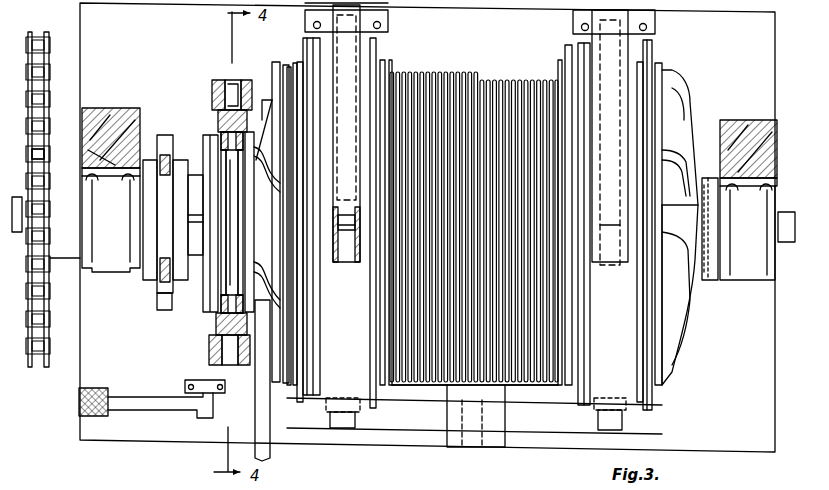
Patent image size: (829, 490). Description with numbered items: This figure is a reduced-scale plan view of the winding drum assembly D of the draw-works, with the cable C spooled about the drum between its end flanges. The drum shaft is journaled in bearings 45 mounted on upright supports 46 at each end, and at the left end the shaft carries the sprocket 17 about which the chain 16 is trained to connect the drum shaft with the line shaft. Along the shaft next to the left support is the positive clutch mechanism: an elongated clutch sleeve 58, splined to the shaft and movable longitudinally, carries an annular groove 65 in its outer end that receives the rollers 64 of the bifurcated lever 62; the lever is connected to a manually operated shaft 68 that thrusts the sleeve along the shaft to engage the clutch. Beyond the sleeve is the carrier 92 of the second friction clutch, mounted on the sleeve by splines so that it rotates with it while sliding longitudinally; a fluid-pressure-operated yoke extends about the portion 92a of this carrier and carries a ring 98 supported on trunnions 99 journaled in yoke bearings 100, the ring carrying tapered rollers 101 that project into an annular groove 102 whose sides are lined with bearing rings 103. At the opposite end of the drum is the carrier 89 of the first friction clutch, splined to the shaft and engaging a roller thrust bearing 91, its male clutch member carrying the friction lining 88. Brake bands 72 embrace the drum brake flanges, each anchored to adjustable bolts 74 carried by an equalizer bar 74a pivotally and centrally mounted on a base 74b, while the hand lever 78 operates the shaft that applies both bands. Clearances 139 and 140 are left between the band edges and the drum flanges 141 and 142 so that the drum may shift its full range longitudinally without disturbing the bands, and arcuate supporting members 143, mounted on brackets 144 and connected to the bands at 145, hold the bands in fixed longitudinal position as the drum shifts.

The chain 16 is at (49, 35).
The sprocket 17 is at (40, 158).
The bearing 45 is at (107, 272).
The upright support 46 is at (118, 118).
The clutch sleeve 58 is at (196, 262).
The lever 62 is at (158, 300).
The roller 64 is at (160, 278).
The annular groove 65 is at (172, 190).
The shaft 68 is at (203, 380).
The brake band 72 is at (302, 404).
The adjustable bolt 74 is at (342, 430).
The equalizer bar 74a is at (432, 428).
The base 74b is at (455, 450).
The hand lever 78 is at (260, 410).
The friction lining 88 is at (298, 48).
The carrier 89 is at (674, 108).
The roller thrust bearing 91 is at (708, 284).
The carrier 92 is at (274, 92).
The carrier portion 92a is at (290, 38).
The ring 98 is at (212, 120).
The trunnion 99 is at (222, 90).
The bearing 100 is at (214, 95).
The tapered roller 101 is at (222, 144).
The annular groove 102 is at (227, 252).
The bearing ring 103 is at (221, 207).
The clearance 139 is at (375, 316).
The clearance 140 is at (309, 330).
The drum flange 141 is at (380, 352).
The drum flange 142 is at (302, 368).
The arcuate supporting member 143 is at (348, 62).
The bracket 144 is at (372, 14).
The connection 145 is at (342, 250).
The cable C is at (480, 72).
The winding drum assembly D is at (540, 428).